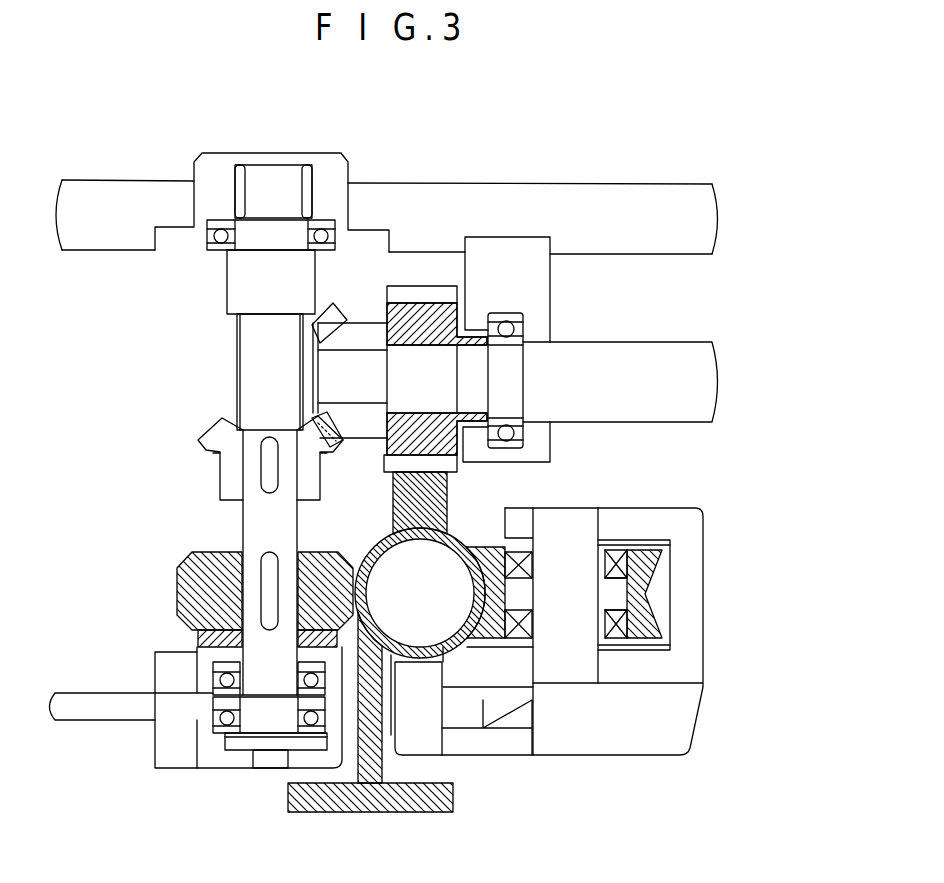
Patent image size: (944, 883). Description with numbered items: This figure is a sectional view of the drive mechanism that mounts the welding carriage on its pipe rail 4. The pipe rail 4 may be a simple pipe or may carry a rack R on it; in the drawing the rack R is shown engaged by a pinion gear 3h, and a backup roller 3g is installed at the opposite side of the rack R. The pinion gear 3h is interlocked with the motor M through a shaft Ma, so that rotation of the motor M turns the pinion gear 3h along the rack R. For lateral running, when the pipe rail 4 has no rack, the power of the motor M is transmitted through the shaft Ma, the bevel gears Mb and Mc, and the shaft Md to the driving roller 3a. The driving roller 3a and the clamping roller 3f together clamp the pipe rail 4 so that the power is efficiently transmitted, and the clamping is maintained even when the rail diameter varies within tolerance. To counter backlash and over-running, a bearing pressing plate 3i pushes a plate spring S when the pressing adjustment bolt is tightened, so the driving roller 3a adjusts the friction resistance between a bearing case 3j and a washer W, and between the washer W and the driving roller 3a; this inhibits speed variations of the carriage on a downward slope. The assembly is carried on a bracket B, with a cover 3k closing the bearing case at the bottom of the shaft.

The motor M is at (455, 296).
The shaft Ma is at (575, 342).
The bevel gear Mb is at (353, 328).
The bevel gear Mc is at (222, 455).
The shaft Md is at (255, 358).
The pinion gear 3h is at (430, 303).
The rack R is at (450, 497).
The driving roller 3a is at (190, 588).
The washer W is at (195, 637).
The bearing case 3j is at (205, 672).
The plate spring S is at (213, 705).
The bearing pressing plate 3i is at (235, 745).
The cover 3k is at (268, 770).
The pipe rail 4 is at (455, 655).
The bracket B is at (372, 800).
The backup roller 3g is at (428, 737).
The clamping roller 3f is at (647, 583).